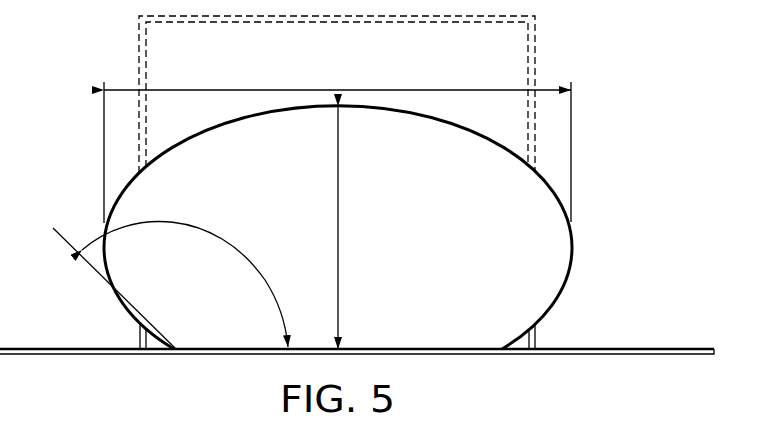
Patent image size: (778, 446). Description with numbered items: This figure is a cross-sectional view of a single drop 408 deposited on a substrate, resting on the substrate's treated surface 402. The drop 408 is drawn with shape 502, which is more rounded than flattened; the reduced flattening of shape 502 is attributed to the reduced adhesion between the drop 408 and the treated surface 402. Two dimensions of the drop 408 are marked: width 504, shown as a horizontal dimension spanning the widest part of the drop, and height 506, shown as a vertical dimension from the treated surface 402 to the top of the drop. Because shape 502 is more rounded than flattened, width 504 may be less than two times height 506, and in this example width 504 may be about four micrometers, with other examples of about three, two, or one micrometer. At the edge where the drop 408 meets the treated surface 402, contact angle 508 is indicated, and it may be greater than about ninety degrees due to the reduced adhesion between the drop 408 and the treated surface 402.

The treated surface 402 is at (602, 348).
The drop 408 is at (573, 250).
The shape 502 is at (463, 160).
The width 504 is at (338, 90).
The height 506 is at (338, 226).
The contact angle 508 is at (226, 236).